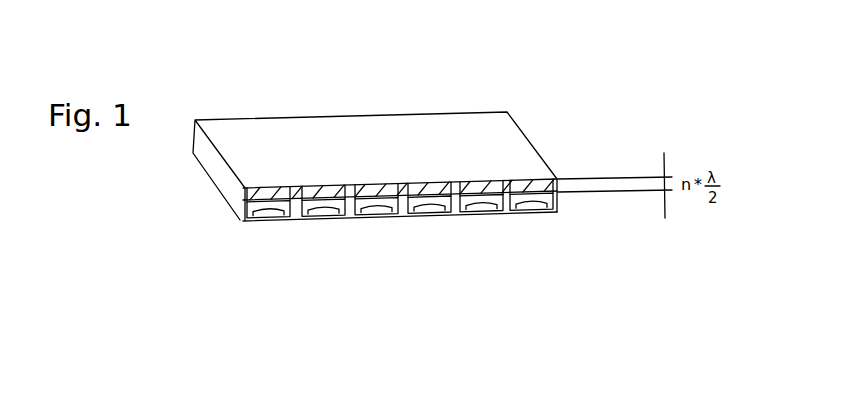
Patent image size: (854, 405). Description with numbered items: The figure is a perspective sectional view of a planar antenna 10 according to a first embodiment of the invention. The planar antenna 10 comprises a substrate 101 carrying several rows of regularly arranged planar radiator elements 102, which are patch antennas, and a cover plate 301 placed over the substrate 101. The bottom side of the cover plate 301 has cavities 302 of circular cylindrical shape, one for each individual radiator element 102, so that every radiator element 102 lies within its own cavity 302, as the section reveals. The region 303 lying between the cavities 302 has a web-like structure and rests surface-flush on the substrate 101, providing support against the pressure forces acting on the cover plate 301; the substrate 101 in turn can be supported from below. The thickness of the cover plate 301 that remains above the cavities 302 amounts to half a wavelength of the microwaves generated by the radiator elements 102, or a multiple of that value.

The planar antenna 10 is at (522, 100).
The cover plate 301 is at (487, 158).
The cavities 302 is at (242, 223).
The region 303 is at (350, 187).
The planar radiator elements 102 is at (322, 219).
The substrate 101 is at (434, 220).